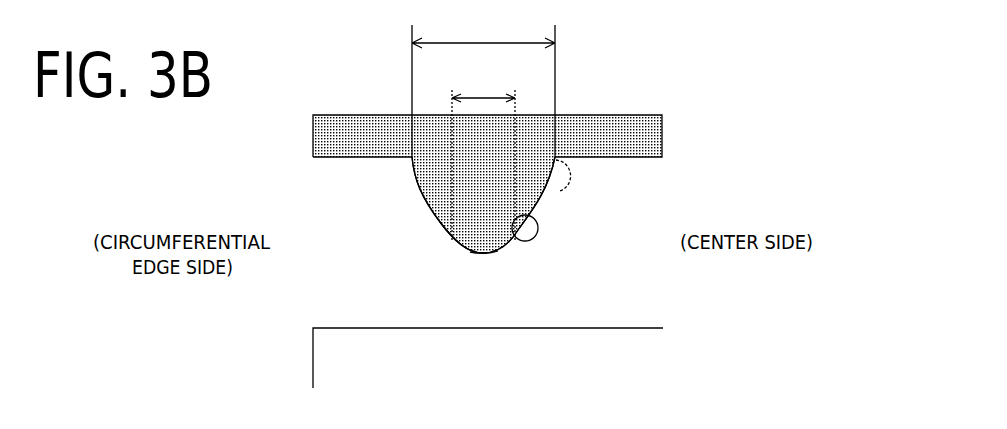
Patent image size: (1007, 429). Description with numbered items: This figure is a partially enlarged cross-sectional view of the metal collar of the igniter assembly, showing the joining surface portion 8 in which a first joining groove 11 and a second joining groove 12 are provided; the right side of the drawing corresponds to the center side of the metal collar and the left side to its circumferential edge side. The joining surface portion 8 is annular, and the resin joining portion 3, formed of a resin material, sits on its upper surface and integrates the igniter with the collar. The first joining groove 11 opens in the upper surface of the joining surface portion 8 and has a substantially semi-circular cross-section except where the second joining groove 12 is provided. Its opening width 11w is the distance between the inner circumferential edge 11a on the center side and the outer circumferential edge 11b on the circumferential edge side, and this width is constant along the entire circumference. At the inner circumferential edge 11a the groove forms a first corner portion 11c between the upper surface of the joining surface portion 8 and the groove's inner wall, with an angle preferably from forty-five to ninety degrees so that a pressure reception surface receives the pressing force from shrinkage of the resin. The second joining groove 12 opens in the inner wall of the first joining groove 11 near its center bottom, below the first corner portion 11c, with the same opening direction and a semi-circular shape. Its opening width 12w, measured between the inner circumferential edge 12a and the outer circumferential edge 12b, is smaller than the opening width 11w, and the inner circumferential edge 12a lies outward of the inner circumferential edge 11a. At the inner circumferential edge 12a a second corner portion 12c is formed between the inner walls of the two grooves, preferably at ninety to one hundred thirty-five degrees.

The resin joining portion 3 is at (630, 135).
The joining surface portion 8 is at (578, 310).
The first joining groove 11 is at (420, 193).
The inner circumferential edge 11a is at (562, 184).
The outer circumferential edge 11b is at (410, 159).
The first corner portion 11c is at (577, 174).
The opening width of the first joining groove 11w is at (483, 90).
The second joining groove 12 is at (470, 252).
The inner circumferential edge 12a is at (531, 244).
The outer circumferential edge 12b is at (447, 223).
The second corner portion 12c is at (515, 248).
The opening width of the second joining groove 12w is at (483, 157).